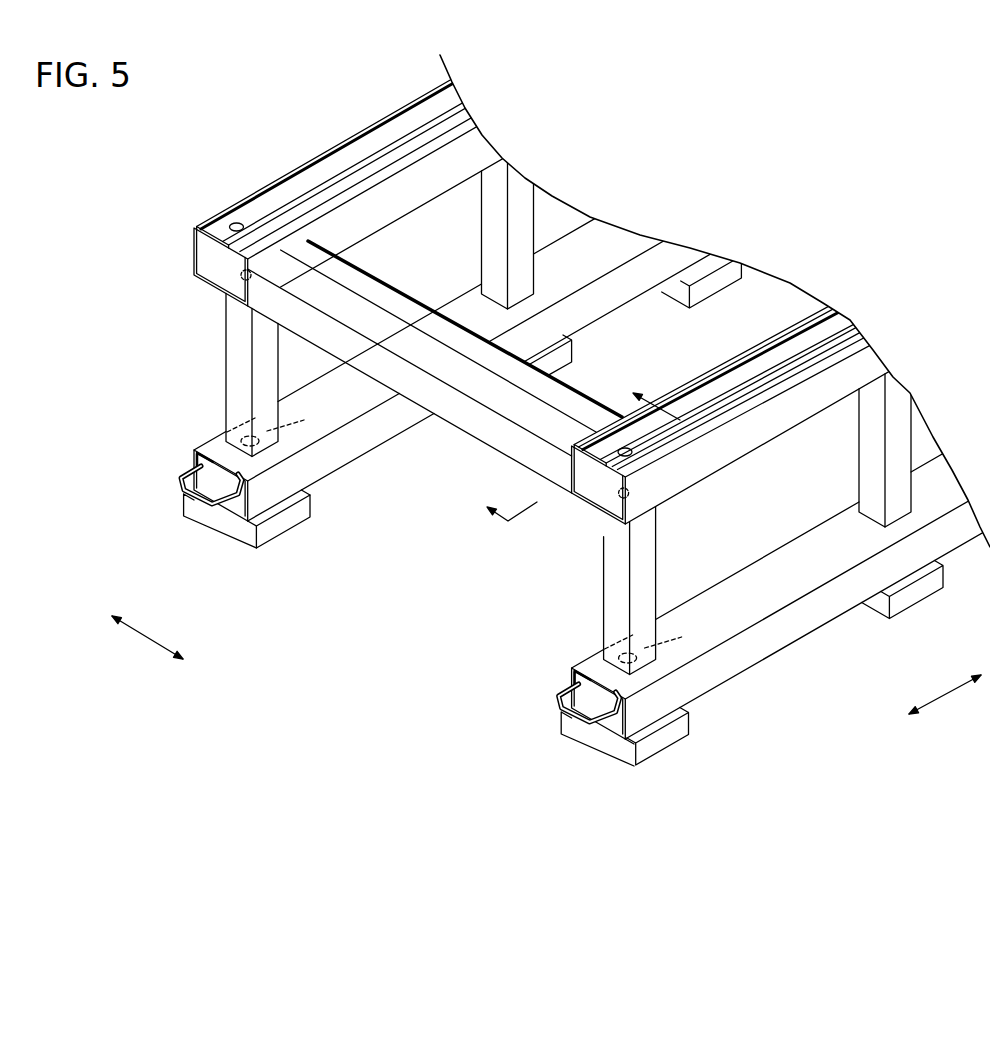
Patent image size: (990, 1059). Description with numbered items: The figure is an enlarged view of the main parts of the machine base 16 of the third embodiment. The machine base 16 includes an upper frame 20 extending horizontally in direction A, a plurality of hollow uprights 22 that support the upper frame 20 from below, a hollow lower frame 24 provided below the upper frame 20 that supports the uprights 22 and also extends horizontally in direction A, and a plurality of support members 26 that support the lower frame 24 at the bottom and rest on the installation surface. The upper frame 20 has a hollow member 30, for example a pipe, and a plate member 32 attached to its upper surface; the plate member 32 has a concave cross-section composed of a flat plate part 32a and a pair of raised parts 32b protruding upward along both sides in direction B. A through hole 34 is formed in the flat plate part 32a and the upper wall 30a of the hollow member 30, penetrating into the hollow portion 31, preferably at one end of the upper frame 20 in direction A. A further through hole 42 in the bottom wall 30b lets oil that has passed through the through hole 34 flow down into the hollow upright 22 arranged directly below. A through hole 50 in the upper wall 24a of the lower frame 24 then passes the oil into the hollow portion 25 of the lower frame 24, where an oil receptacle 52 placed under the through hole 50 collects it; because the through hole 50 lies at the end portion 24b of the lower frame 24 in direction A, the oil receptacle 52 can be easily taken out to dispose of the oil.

The machine base 16 is at (114, 161).
The upper frame 20 is at (322, 112).
The upright 22 is at (243, 386).
The lower frame 24 is at (374, 455).
The upper wall of the lower frame 24a is at (303, 405).
The end portion of base beam 24b is at (238, 520).
The hollow portion of the lower frame 25 is at (196, 460).
The support member 26 is at (283, 521).
The hollow member 30 is at (355, 194).
The upper wall of the hollow member 30a is at (474, 132).
The bottom wall of the hollow member 30b is at (215, 272).
The hollow portion of the hollow member 31 is at (205, 251).
The plate member 32 is at (276, 194).
The flat plate part 32a is at (421, 117).
The raised part 32b is at (466, 99).
The through hole 34 is at (235, 222).
The through hole 42 is at (246, 282).
The through hole 50 is at (304, 420).
The oil receptacle 52 is at (235, 503).